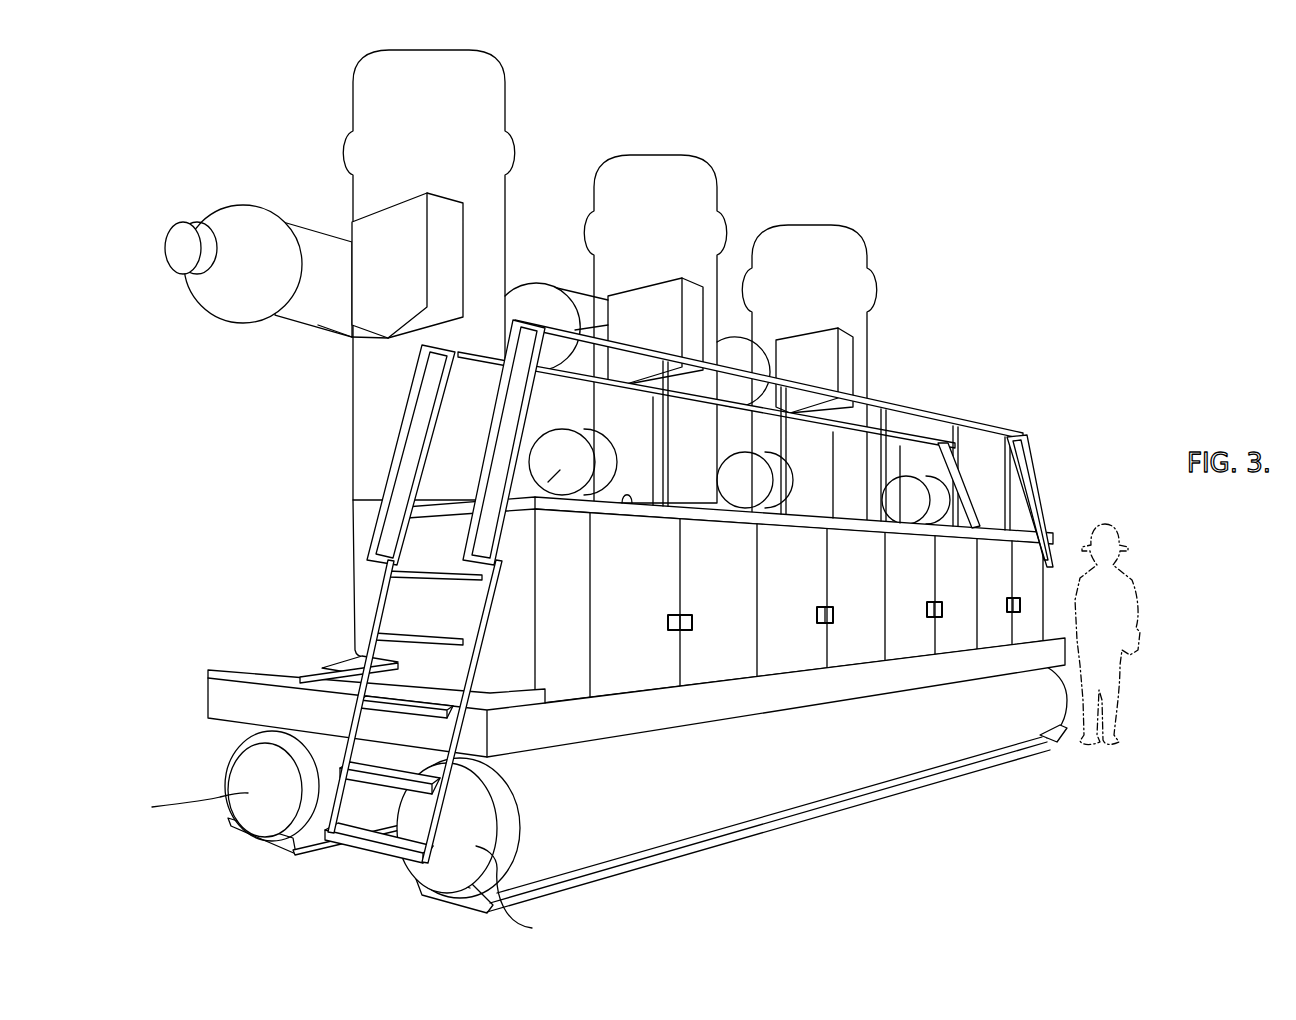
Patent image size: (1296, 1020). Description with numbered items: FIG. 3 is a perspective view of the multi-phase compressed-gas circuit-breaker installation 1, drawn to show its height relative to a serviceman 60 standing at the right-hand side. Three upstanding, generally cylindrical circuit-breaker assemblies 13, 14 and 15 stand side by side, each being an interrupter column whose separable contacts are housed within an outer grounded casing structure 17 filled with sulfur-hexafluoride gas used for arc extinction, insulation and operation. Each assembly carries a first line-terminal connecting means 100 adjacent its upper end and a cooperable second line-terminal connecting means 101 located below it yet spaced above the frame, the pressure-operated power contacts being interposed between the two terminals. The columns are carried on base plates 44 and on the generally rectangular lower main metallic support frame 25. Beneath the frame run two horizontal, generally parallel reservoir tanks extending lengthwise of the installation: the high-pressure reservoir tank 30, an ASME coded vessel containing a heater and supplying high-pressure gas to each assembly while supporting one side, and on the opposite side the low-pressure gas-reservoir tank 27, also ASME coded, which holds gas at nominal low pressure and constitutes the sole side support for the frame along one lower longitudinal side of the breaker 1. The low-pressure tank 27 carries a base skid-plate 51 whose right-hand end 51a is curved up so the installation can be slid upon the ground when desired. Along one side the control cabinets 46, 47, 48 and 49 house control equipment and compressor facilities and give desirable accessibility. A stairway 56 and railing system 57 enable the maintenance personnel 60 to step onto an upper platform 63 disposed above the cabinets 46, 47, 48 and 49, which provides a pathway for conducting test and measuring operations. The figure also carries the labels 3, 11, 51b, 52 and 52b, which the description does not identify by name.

The circuit-breaker installation 1 is at (881, 232).
The compressor 3 is at (313, 226).
The motor 11 is at (291, 330).
The circuit-breaker assembly 13 is at (440, 142).
The circuit-breaker assembly 14 is at (670, 234).
The circuit-breaker assembly 15 is at (827, 295).
The casing structure 17 is at (609, 353).
The support frame 25 is at (853, 688).
The low-pressure gas-reservoir tank 27 is at (762, 793).
The high-pressure reservoir tank 30 is at (247, 763).
The base plates 44 is at (350, 661).
The control cabinet 46 is at (647, 599).
The control cabinet 47 is at (804, 599).
The control cabinet 48 is at (919, 593).
The control cabinet 49 is at (1005, 588).
The base skid-plate 51 is at (908, 790).
The right-hand end of skid-plate 51a is at (1063, 735).
The pontoon bracket 51b is at (457, 893).
The tank cradle 52 is at (302, 855).
The tank cradle plate 52b is at (243, 835).
The stairway 56 is at (487, 607).
The railing system 57 is at (877, 401).
The maintenance personnel 60 is at (1120, 587).
The upper platform 63 is at (630, 504).
The first line-terminal connecting means 100 is at (328, 325).
The second line-terminal connecting means 101 is at (548, 482).